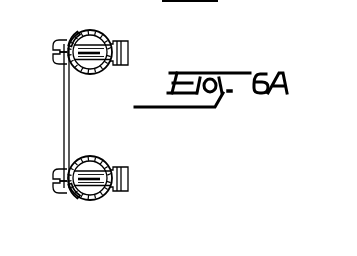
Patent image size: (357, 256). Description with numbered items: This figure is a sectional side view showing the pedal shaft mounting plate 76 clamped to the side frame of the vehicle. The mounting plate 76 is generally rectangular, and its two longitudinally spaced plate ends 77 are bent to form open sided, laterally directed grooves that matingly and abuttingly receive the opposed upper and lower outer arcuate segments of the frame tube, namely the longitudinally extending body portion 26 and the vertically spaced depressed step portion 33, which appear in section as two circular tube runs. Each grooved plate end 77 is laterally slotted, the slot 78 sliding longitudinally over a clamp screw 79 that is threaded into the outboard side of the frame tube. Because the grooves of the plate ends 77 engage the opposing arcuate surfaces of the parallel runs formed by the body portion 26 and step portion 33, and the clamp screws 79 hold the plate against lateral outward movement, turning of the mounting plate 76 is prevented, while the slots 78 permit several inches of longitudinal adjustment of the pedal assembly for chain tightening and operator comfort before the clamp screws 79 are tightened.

The body portion 26 is at (105, 160).
The step portion 33 is at (98, 31).
The mounting plate 76 is at (62, 103).
The plate ends 77 is at (74, 33).
The slots 78 is at (57, 63).
The clamp screw 79 is at (60, 41).